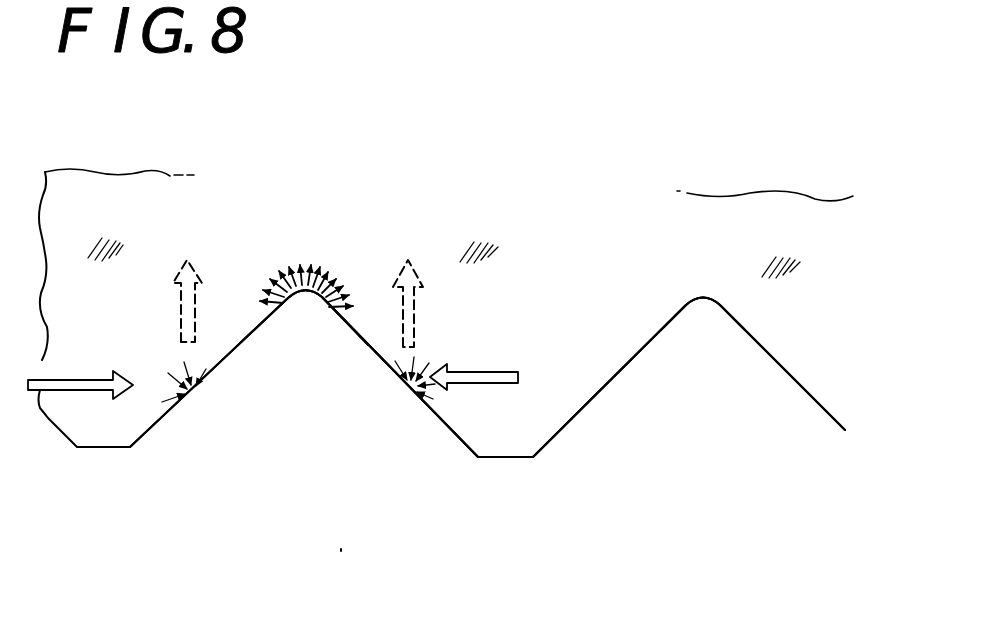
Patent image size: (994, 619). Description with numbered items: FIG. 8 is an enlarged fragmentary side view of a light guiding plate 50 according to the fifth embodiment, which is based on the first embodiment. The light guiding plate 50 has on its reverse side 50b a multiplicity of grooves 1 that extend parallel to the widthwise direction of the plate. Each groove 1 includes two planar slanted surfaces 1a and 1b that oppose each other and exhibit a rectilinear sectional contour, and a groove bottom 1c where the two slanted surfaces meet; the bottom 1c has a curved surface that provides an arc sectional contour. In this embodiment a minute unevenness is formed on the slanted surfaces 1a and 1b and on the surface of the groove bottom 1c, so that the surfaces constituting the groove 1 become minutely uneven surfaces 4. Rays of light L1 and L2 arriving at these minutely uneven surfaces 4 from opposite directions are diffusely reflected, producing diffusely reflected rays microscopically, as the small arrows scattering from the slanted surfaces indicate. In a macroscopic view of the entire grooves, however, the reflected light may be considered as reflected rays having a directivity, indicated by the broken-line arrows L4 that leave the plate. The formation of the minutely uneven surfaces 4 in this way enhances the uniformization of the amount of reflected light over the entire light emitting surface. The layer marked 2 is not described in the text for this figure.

The groove 1 is at (336, 399).
The slanted surface 1a is at (267, 321).
The slanted surface 1b is at (412, 392).
The groove bottom 1c is at (310, 300).
The coating layer on inclined surface 2 is at (433, 411).
The minutely uneven surface 4 is at (233, 352).
The light guiding plate 50 is at (591, 287).
The reverse side 50b is at (510, 460).
The ray of light L1 is at (80, 371).
The ray of light L2 is at (494, 381).
The reflected ray having directivity L4 is at (196, 271).